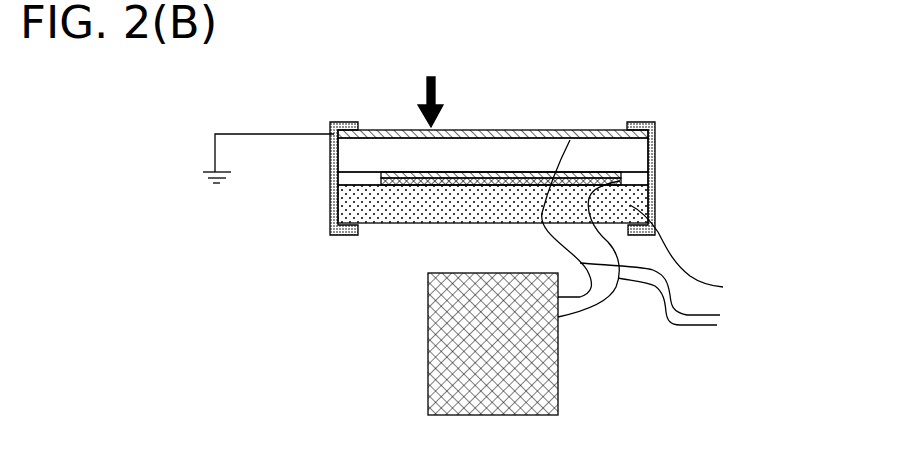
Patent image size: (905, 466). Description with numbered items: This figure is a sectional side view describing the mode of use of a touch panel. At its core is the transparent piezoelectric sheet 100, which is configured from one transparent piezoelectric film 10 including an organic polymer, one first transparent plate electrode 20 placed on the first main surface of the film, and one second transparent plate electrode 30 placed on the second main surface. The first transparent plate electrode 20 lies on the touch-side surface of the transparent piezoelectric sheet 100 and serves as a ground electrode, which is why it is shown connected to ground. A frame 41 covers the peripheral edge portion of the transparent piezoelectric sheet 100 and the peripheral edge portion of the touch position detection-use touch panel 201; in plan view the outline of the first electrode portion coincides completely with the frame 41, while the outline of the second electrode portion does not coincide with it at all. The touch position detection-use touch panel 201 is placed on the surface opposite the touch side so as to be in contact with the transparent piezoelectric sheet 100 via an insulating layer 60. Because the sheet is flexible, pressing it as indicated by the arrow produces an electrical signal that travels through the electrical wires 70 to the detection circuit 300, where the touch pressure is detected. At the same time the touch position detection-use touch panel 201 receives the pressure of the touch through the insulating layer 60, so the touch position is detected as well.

The transparent piezoelectric sheet 100 is at (586, 148).
The frame 41 is at (342, 124).
The transparent piezoelectric film 10 is at (620, 132).
The first transparent plate electrode 20 is at (598, 145).
The second transparent plate electrode 30 is at (615, 172).
The insulating layer 60 is at (628, 203).
The touch position detection-use touch panel 201 is at (711, 254).
The electrical wires 70 is at (648, 237).
The detection circuit 300 is at (440, 350).